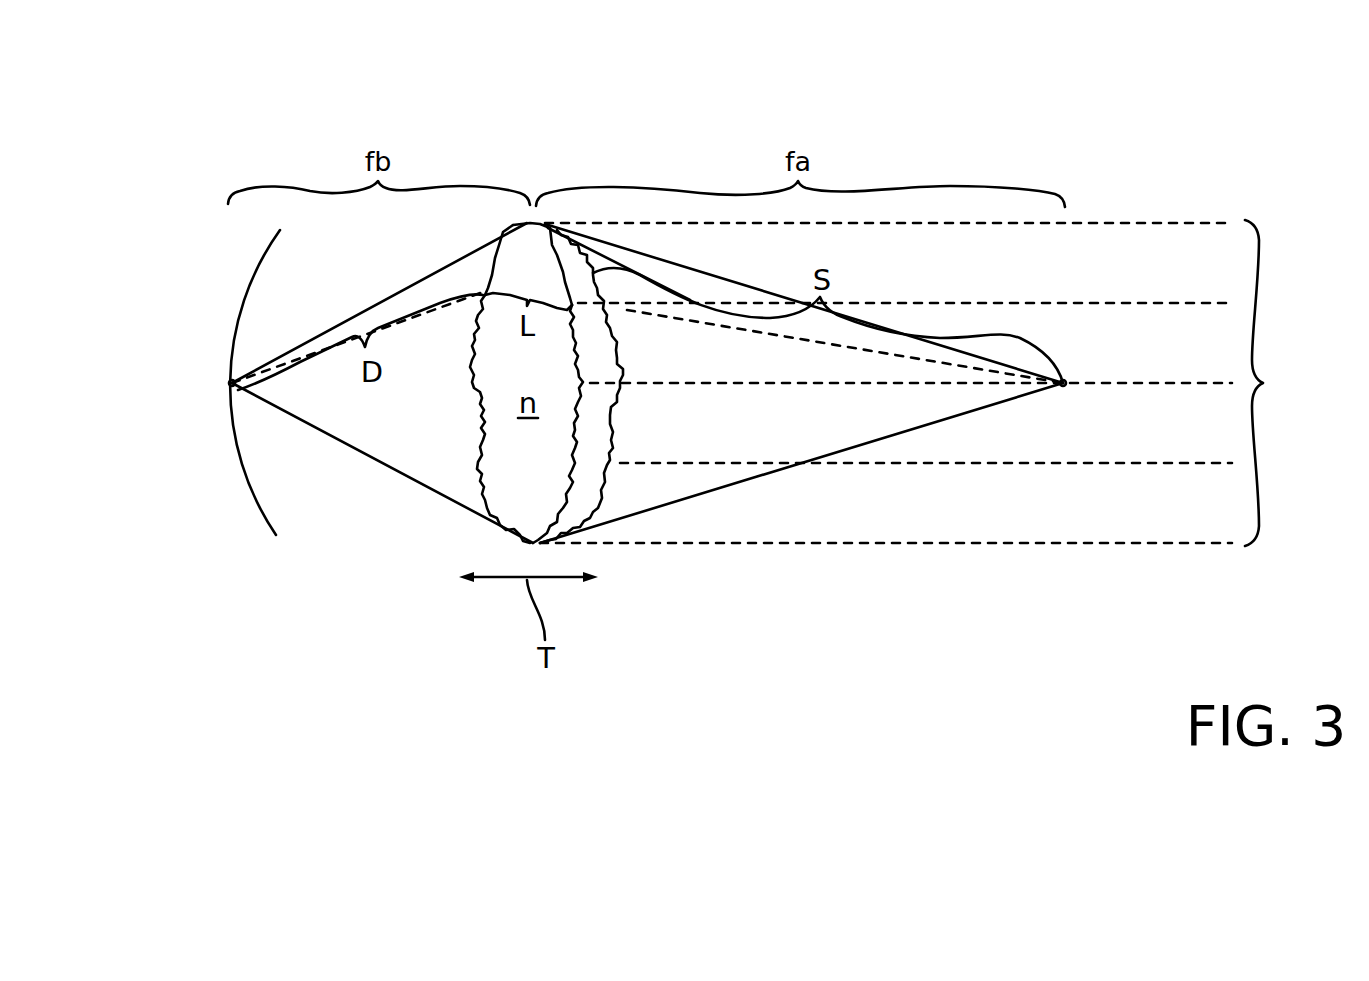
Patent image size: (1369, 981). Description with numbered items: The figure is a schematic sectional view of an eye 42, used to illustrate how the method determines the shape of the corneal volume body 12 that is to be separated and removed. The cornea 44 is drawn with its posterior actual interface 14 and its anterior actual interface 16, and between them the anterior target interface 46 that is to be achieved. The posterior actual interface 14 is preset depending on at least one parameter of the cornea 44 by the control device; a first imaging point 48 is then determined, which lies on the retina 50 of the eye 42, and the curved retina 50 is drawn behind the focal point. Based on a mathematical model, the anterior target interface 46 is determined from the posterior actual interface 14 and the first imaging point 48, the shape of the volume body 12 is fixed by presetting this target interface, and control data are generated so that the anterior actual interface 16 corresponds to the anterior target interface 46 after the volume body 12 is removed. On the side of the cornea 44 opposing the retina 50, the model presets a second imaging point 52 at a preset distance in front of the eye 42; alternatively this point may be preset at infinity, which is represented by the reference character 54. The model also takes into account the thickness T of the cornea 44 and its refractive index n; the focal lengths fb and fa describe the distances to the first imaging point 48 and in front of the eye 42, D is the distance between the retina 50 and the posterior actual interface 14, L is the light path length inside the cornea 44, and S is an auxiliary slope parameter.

The volume body 12 is at (530, 253).
The posterior actual interface 14 is at (480, 470).
The anterior actual interface 16 is at (615, 440).
The eye 42 is at (413, 204).
The cornea 44 is at (568, 204).
The anterior target interface 46 is at (573, 467).
The first imaging point 48 is at (232, 383).
The retina 50 is at (243, 477).
The second imaging point 52 is at (1063, 383).
The second imaging point at infinity 54 is at (923, 383).